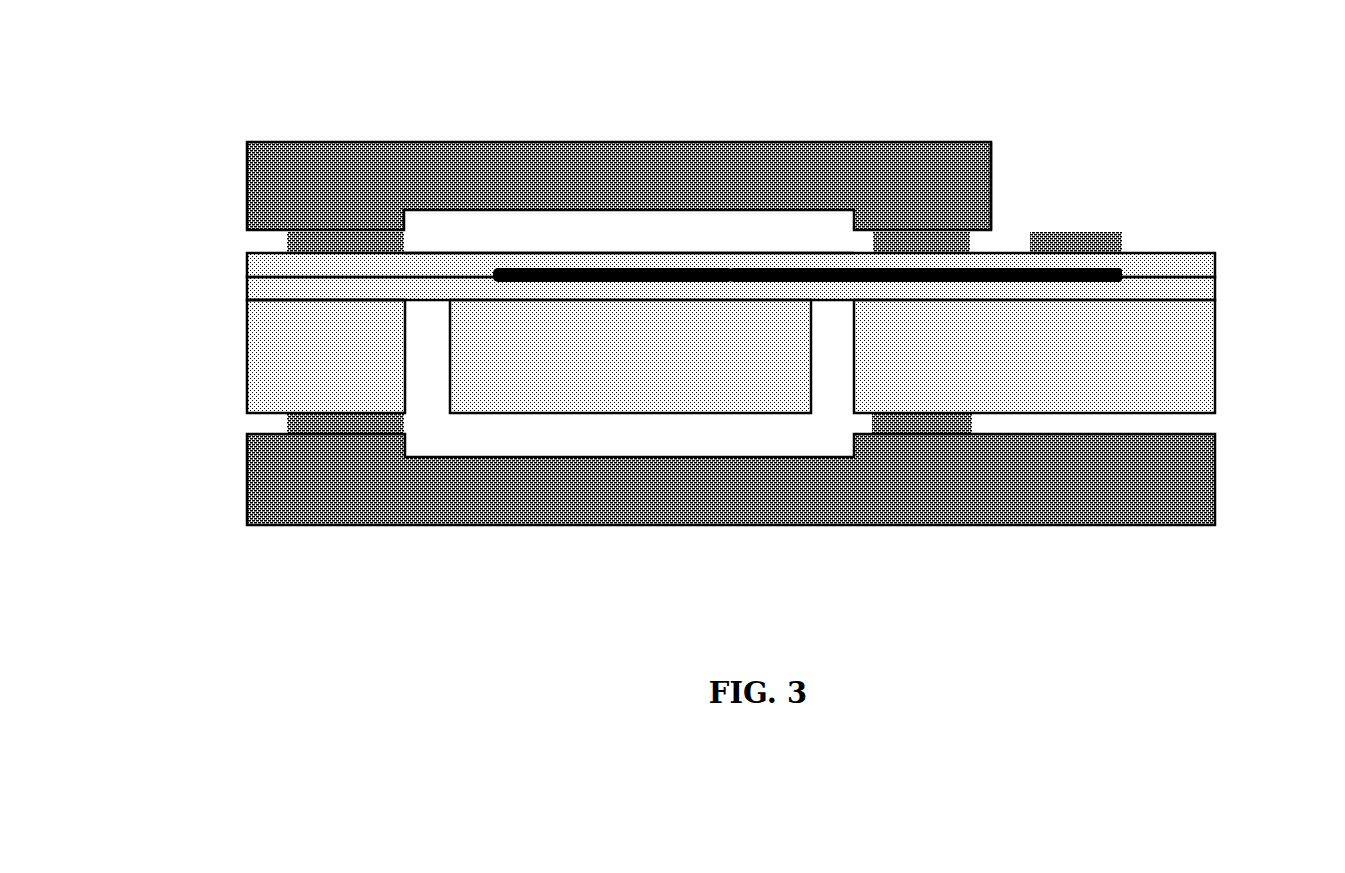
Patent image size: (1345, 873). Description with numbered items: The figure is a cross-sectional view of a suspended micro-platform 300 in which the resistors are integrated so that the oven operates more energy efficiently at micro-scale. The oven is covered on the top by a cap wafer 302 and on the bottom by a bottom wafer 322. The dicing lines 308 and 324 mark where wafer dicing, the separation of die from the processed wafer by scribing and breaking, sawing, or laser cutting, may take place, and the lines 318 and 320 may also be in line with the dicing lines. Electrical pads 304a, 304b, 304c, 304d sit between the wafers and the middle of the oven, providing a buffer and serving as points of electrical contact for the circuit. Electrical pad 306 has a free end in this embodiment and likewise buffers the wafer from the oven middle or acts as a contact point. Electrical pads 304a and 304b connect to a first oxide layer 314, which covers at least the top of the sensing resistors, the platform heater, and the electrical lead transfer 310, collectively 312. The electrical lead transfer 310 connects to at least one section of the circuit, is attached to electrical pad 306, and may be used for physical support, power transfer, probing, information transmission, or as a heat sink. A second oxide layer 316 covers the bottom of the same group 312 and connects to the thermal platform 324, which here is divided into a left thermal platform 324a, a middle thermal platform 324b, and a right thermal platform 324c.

The suspended micro-platform 300 is at (1220, 152).
The cap wafer 302 is at (565, 142).
The electrical pad 304a is at (975, 240).
The electrical pad 304b is at (287, 240).
The electrical pad 304c is at (287, 422).
The electrical pad 304d is at (975, 421).
The electrical pad 306 is at (1103, 230).
The dicing line 308 is at (993, 180).
The electrical lead transfer 310 is at (880, 268).
The resistors, platform heater and electrical lead transfer 312 is at (628, 272).
The first oxide layer 314 is at (463, 250).
The second oxide layer 316 is at (303, 297).
The line 318 is at (1217, 260).
The line 320 is at (1217, 288).
The bottom wafer 322 is at (1217, 485).
The thermal platform 324 is at (791, 337).
The left thermal platform 324a is at (326, 356).
The middle thermal platform 324b is at (630, 356).
The right thermal platform 324c is at (1034, 356).